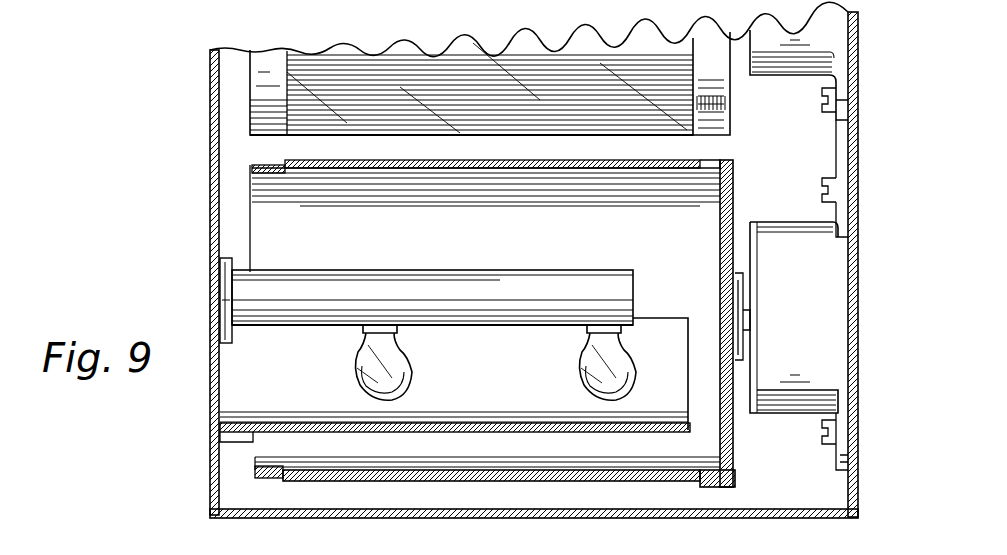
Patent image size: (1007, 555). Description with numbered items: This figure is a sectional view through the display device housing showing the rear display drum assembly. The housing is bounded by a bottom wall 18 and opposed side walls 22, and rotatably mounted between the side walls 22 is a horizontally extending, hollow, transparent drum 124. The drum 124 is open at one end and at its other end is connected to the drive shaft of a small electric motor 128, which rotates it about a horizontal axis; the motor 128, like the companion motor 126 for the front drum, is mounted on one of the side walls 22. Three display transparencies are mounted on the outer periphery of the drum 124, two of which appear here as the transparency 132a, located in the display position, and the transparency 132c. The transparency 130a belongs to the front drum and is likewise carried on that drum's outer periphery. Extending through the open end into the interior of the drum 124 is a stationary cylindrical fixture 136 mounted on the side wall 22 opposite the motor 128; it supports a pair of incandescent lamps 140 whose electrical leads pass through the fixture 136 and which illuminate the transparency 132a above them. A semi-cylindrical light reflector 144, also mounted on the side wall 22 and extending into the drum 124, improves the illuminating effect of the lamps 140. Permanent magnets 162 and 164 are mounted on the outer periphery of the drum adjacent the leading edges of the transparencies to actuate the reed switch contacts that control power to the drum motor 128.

The bottom wall 18 is at (562, 517).
The side wall 22 is at (212, 200).
The transparent drum 124 is at (252, 460).
The electric motor 126 is at (797, 37).
The electric motor 128 is at (803, 298).
The display transparency 130a is at (394, 60).
The display transparency 132a is at (680, 158).
The display transparency 132c is at (425, 482).
The cylindrical fixture 136 is at (393, 283).
The incandescent lamp 140 is at (575, 366).
The light reflector 144 is at (250, 436).
The permanent magnet 162 is at (730, 115).
The permanent magnet 164 is at (737, 478).